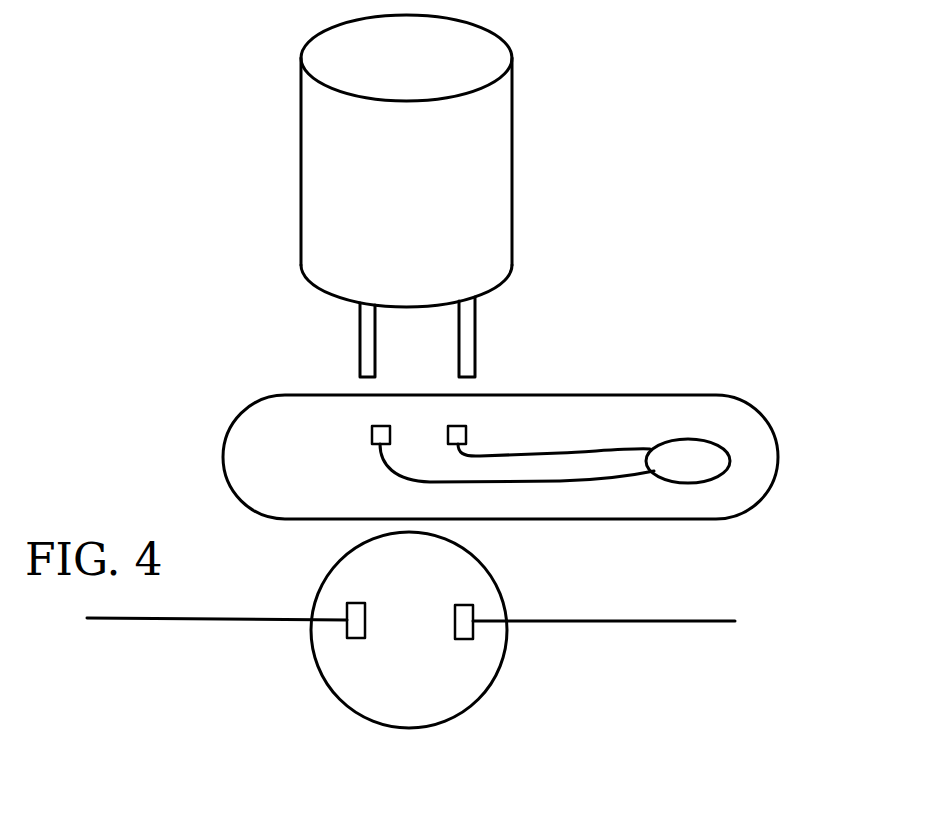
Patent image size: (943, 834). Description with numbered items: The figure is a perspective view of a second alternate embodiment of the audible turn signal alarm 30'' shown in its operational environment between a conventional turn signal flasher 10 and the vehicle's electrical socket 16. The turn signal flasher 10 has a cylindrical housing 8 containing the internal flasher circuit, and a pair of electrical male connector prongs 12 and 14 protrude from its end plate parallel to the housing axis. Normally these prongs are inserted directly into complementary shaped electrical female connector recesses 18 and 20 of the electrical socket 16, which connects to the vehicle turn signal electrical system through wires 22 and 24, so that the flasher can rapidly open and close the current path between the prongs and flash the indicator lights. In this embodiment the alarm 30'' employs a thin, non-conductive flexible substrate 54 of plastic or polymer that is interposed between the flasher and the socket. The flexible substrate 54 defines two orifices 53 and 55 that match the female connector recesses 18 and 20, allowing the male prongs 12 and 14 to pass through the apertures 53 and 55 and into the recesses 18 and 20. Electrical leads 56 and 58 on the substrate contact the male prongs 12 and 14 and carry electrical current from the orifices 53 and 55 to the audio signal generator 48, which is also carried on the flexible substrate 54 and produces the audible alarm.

The turn signal flasher 10 is at (268, 152).
The housing 8 is at (493, 153).
The electrical male connector prong 12 is at (475, 336).
The electrical male connector prong 14 is at (360, 338).
The electrical socket 16 is at (492, 604).
The electrical female connector recess 18 is at (348, 604).
The electrical female connector recess 20 is at (466, 640).
The wire 22 is at (232, 620).
The wire 24 is at (648, 625).
The audible turn signal alarm 30'' is at (541, 471).
The audio signal generator 48 is at (730, 459).
The orifice 53 is at (372, 432).
The flexible substrate 54 is at (240, 455).
The orifice 55 is at (467, 435).
The electrical lead 56 is at (612, 445).
The electrical lead 58 is at (617, 480).